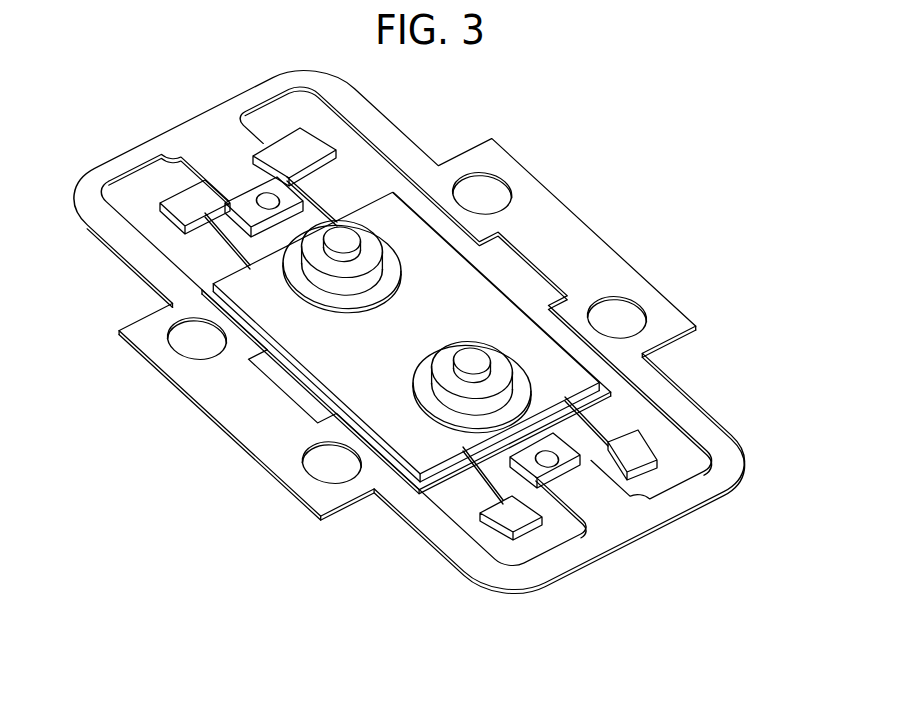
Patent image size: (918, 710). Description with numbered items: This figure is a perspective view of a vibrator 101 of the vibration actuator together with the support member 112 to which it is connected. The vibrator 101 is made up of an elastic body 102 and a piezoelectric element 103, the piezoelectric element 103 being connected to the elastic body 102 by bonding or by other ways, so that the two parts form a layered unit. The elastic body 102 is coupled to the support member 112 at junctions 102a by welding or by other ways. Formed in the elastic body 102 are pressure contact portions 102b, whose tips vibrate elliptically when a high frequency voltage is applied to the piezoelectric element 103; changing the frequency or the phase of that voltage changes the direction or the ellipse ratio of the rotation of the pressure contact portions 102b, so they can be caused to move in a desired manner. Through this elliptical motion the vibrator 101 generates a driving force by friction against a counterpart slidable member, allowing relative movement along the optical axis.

The support member 112 is at (607, 266).
The vibrator 101 is at (514, 342).
The elastic body 102 is at (567, 377).
The piezoelectric element 103 is at (581, 393).
The pressure contact portions 102b is at (475, 362).
The junctions 102a is at (525, 500).